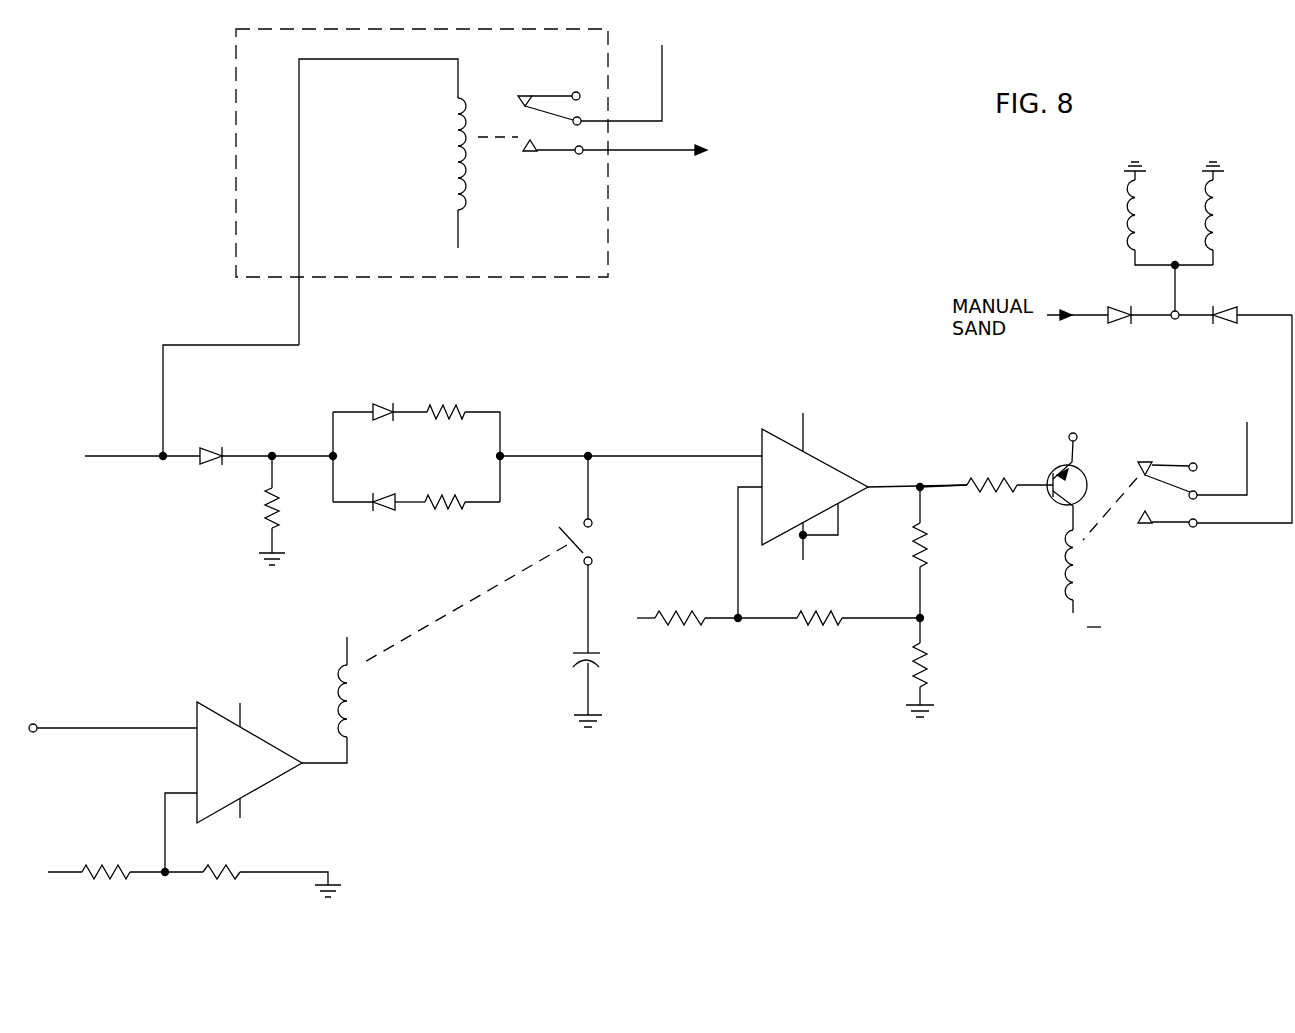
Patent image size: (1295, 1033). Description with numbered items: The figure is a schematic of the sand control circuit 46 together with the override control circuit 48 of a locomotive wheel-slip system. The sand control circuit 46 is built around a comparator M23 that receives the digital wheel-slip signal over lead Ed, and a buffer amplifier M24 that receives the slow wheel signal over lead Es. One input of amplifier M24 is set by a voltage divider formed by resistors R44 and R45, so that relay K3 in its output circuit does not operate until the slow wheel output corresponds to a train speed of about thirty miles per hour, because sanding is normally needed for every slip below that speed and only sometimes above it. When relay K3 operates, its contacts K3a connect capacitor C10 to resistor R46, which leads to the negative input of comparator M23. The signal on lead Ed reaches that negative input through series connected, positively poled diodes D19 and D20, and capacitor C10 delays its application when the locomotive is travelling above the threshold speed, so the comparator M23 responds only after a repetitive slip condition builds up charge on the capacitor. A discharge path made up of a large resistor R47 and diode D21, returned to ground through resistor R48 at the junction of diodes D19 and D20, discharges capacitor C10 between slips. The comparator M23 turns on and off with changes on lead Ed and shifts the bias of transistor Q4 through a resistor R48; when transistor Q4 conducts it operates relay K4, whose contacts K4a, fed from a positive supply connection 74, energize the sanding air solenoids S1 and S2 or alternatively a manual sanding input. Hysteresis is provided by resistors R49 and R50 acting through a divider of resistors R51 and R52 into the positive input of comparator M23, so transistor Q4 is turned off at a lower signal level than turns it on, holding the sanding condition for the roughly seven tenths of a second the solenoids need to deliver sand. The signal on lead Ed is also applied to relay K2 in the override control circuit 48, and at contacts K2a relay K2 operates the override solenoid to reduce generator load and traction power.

The sand control circuit 46 is at (632, 775).
The control circuit 48 is at (608, 237).
The +74 volt supply 74 is at (962, 261).
The lead Ed is at (364, 60).
The lead Es is at (122, 728).
The relay K2 is at (458, 166).
The contacts K2a is at (510, 122).
The relay K3 is at (356, 698).
The relay contacts K3a is at (590, 540).
The relay K4 is at (1063, 566).
The contacts K4a is at (1138, 504).
The diode D19 is at (210, 446).
The diode D20 is at (371, 406).
The diode D21 is at (385, 520).
The resistor R44 is at (128, 846).
The resistor R45 is at (218, 864).
The resistor R46 is at (438, 406).
The resistor R47 is at (442, 514).
The resistor R48 is at (264, 520).
The resistor R49 is at (928, 540).
The resistor R50 is at (928, 664).
The resistor R51 is at (806, 616).
The resistor R52 is at (703, 588).
The capacitor C10 is at (600, 660).
The comparator M23 is at (868, 458).
The buffer amplifier M24 is at (197, 764).
The transistor Q4 is at (1064, 464).
The sanding air solenoid S1 is at (1222, 218).
The sanding air solenoid S2 is at (1126, 222).